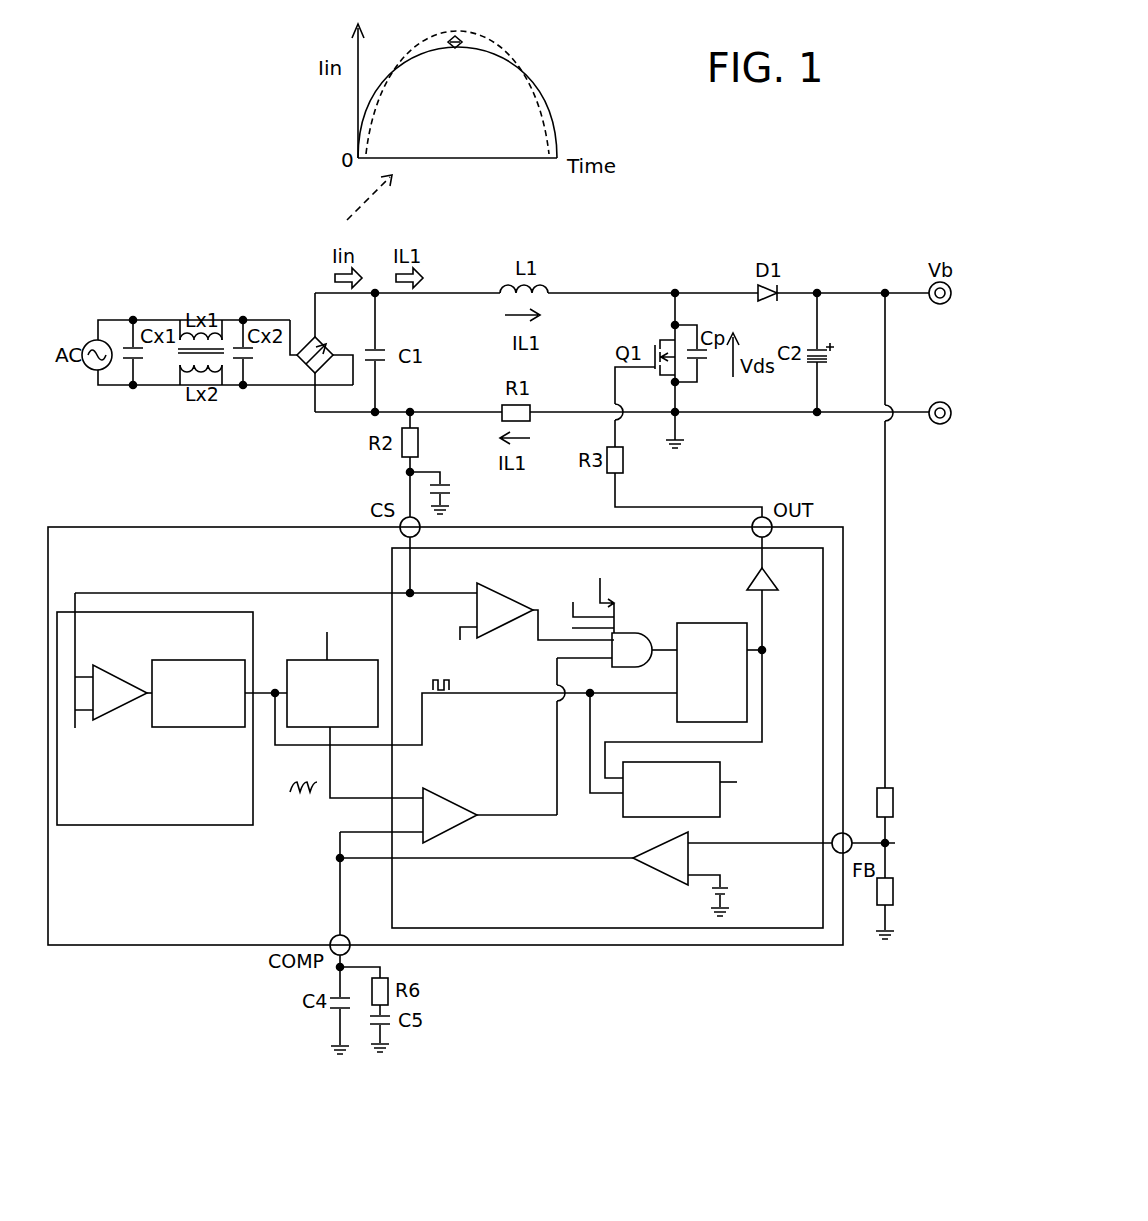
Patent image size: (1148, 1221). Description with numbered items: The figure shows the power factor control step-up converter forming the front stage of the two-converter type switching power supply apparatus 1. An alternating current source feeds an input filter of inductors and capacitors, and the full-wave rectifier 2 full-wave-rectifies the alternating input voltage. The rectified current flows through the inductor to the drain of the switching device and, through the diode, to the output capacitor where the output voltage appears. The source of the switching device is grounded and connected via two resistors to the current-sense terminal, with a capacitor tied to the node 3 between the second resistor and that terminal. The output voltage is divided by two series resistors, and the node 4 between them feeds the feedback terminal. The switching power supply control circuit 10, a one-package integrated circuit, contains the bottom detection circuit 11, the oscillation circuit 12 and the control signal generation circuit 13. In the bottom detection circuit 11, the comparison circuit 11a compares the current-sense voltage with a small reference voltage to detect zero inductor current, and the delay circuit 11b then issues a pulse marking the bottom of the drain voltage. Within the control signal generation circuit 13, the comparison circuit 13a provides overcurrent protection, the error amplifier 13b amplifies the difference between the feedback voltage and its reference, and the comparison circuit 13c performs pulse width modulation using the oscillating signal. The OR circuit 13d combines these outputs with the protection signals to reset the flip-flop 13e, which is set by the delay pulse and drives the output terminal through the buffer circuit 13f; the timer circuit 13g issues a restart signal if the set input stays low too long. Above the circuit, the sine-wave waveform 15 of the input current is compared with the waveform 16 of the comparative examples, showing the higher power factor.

The switching power supply apparatus 1 is at (929, 210).
The full-wave rectifier 2 is at (324, 343).
The node 3 is at (405, 472).
The node 4 is at (895, 843).
The switching power supply control circuit 10 is at (185, 527).
The bottom detection circuit 11 is at (155, 735).
The comparison circuit 11a is at (126, 677).
The delay circuit 11b is at (197, 660).
The oscillation circuit 12 is at (313, 660).
The control signal generation circuit 13 is at (557, 930).
The comparison circuit 13a is at (487, 587).
The error amplifier 13b is at (661, 843).
The comparison circuit 13c is at (453, 802).
The OR circuit 13d is at (638, 632).
The flip-flop 13e is at (707, 623).
The buffer circuit 13f is at (772, 592).
The timer circuit 13g is at (722, 803).
The waveform 15 is at (540, 96).
The waveform 16 is at (511, 47).